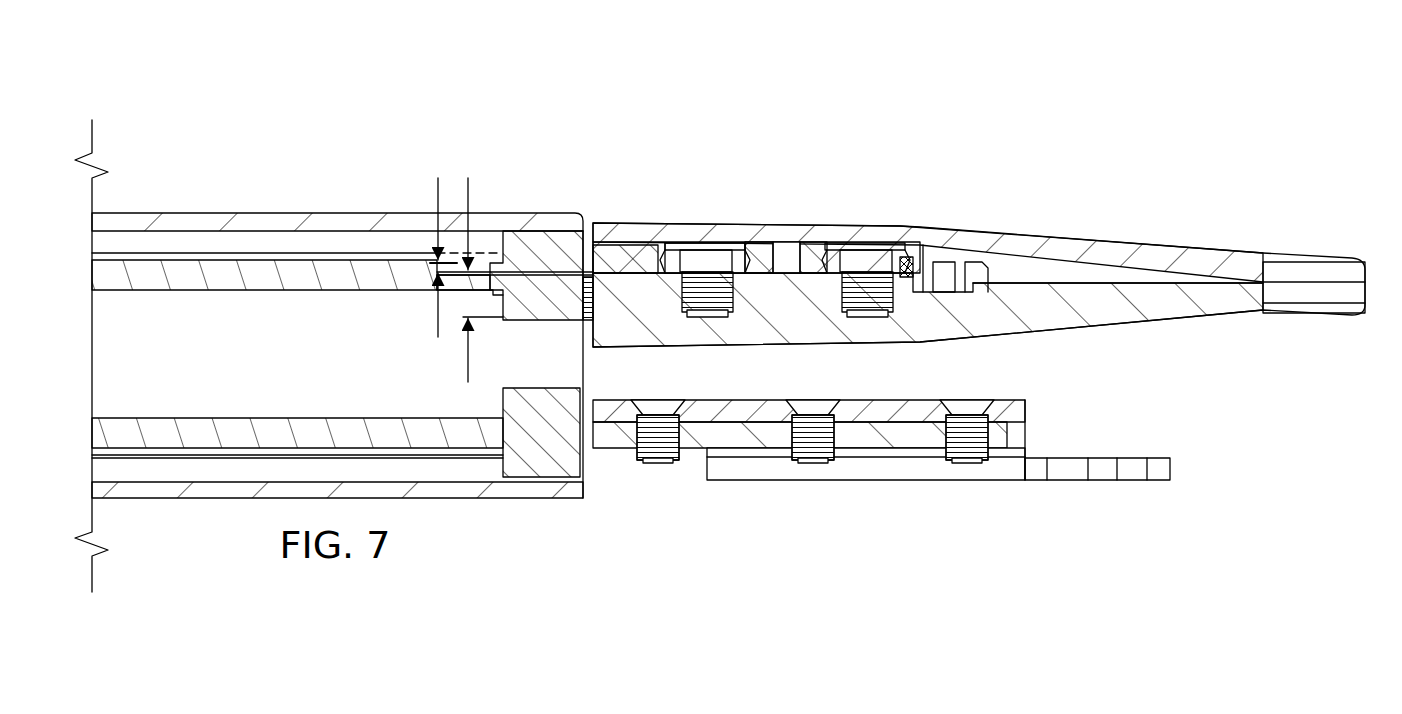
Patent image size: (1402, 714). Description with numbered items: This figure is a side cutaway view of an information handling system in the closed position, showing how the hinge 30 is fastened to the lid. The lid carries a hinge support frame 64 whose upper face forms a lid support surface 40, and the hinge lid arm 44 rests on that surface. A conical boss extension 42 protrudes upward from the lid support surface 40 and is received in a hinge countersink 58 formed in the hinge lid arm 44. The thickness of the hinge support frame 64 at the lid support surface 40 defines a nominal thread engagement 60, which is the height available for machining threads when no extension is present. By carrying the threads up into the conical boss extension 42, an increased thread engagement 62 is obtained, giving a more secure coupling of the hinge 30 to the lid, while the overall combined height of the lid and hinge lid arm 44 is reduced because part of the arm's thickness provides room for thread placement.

The hinge 30 is at (283, 388).
The lid support surface 40 is at (1093, 290).
The conical boss extension 42 is at (845, 225).
The hinge lid arm 44 is at (613, 258).
The hinge countersink 58 is at (913, 228).
The nominal thread engagement 60 is at (468, 178).
The increased thread engagement 62 is at (438, 178).
The hinge support frame 64 is at (1228, 303).